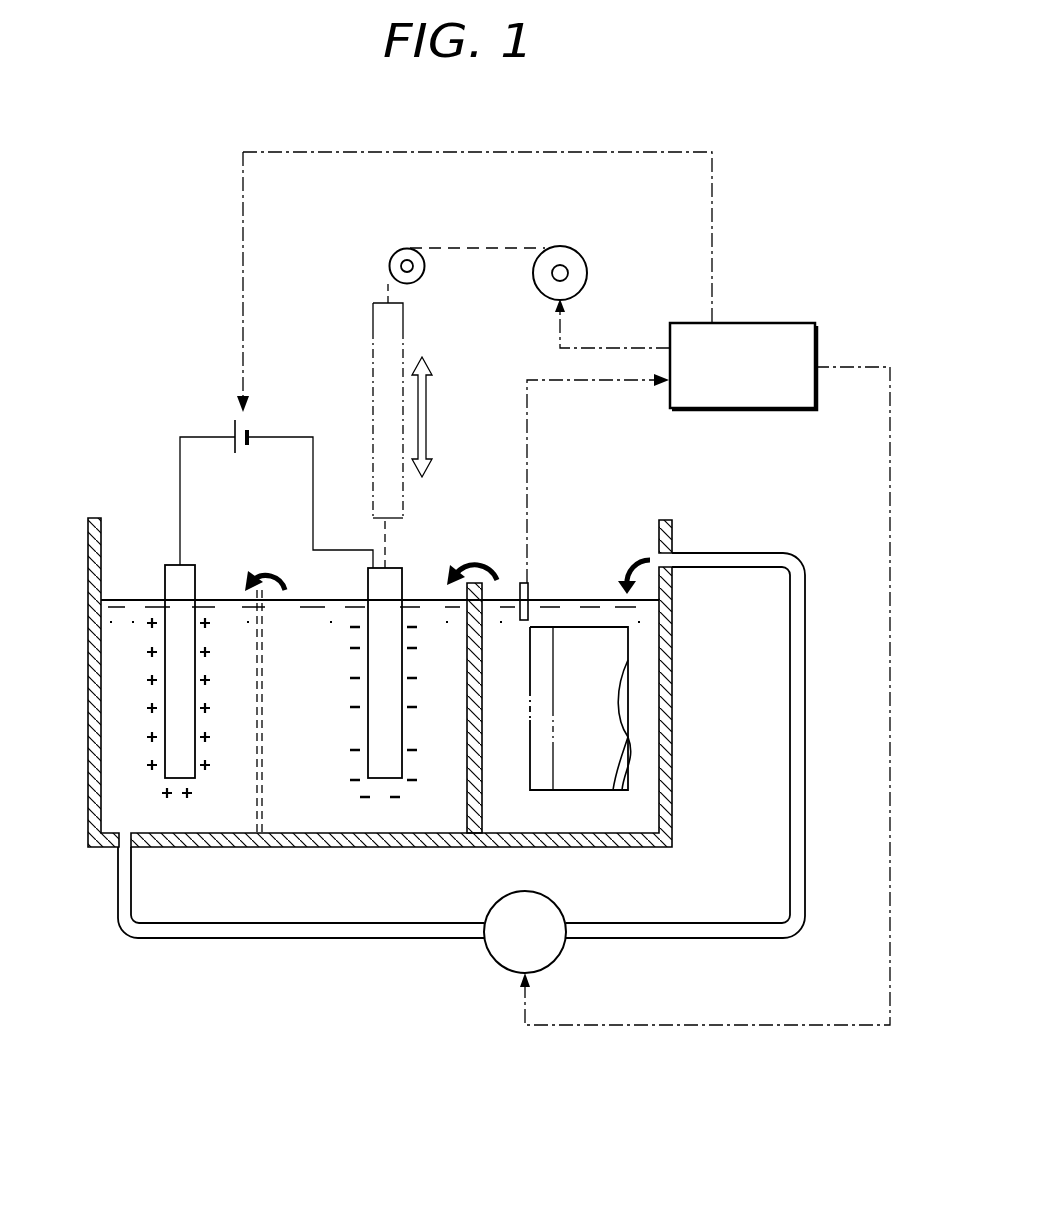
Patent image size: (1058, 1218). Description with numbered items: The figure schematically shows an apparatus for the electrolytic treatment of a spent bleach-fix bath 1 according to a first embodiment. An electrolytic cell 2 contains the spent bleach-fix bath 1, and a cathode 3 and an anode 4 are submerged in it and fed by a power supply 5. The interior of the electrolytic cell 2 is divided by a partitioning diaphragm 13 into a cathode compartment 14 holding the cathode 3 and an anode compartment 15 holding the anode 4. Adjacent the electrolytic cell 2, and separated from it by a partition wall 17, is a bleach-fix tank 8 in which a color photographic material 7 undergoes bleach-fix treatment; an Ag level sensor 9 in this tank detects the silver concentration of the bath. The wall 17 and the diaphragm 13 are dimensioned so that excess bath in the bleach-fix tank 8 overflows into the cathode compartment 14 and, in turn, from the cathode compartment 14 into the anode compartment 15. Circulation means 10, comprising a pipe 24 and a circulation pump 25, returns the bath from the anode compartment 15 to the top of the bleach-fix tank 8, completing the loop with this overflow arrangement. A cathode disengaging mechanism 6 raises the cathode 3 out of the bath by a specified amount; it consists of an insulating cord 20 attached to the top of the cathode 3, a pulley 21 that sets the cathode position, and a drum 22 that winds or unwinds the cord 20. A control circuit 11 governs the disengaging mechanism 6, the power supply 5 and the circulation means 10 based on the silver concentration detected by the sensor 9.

The spent bleach-fix bath 1 is at (305, 605).
The electrolytic cell 2 is at (88, 802).
The cathode 3 is at (400, 566).
The anode 4 is at (160, 565).
The power supply 5 is at (248, 433).
The cathode disengaging mechanism 6 is at (467, 247).
The color photographic material 7 is at (547, 652).
The bleach-fix tank 8 is at (673, 622).
The Ag level sensor 9 is at (528, 583).
The circulation means 10 is at (367, 950).
The control circuit 11 is at (790, 323).
The partitioning diaphragm 13 is at (252, 633).
The cathode compartment 14 is at (428, 612).
The anode compartment 15 is at (115, 612).
The partition wall 17 is at (483, 627).
The insulating cord 20 is at (520, 248).
The pulley 21 is at (407, 249).
The drum 22 is at (577, 262).
The pipe 24 is at (408, 925).
The circulation pump 25 is at (563, 913).